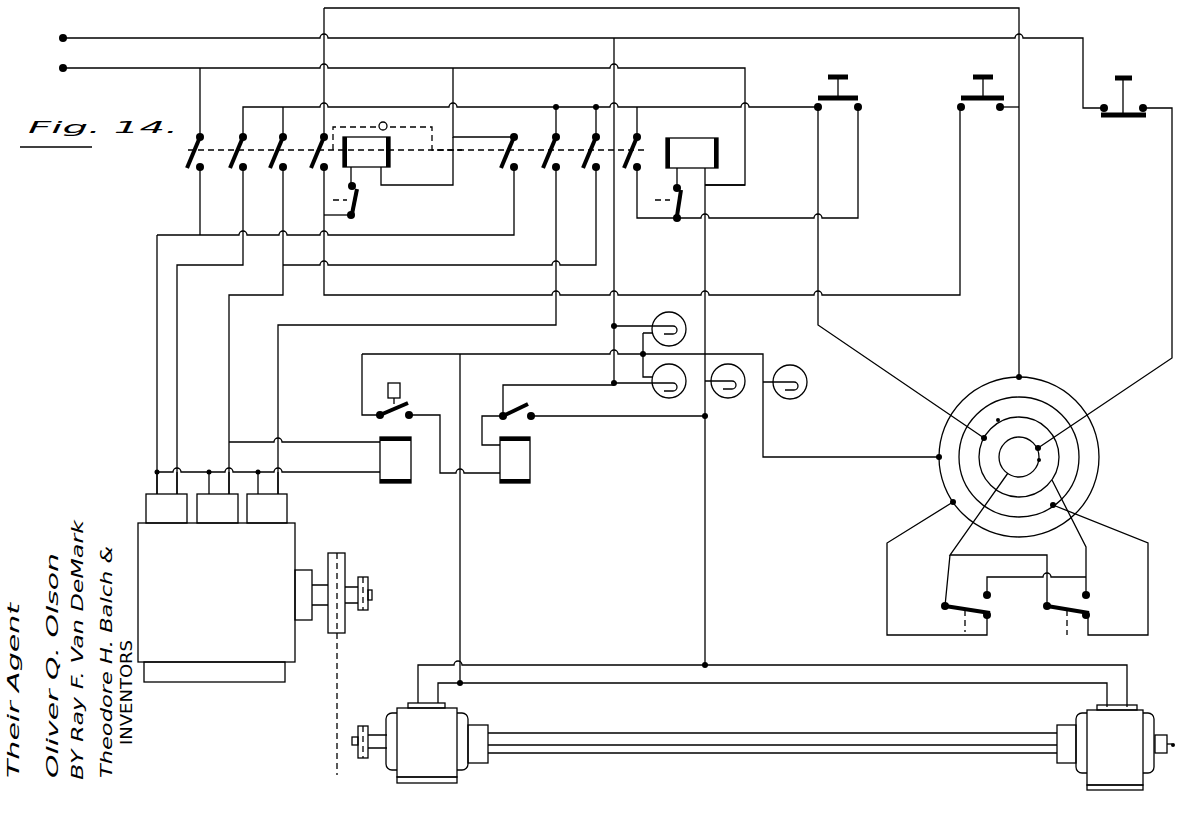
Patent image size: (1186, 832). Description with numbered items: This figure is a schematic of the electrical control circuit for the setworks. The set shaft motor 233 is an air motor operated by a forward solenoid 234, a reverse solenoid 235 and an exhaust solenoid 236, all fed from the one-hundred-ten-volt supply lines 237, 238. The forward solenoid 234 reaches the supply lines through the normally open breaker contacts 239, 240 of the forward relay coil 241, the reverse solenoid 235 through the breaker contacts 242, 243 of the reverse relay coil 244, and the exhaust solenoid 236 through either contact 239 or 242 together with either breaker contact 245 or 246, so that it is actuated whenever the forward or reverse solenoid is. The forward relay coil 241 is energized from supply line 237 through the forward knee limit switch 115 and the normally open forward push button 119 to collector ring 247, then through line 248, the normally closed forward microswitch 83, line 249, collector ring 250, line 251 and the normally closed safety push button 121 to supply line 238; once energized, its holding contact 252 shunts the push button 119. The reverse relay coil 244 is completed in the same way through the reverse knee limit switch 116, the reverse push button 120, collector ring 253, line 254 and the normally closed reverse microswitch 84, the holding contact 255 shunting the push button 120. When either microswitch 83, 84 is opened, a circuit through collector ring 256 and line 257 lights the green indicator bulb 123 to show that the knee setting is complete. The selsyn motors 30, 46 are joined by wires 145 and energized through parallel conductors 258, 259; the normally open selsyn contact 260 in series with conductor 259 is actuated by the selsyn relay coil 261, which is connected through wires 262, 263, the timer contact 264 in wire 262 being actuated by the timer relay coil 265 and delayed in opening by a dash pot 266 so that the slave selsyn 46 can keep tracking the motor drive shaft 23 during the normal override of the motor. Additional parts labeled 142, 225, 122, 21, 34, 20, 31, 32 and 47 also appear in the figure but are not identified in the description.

The supply line 238 is at (128, 37).
The supply line 237 is at (122, 67).
The normally open breaker contact 239 is at (186, 161).
The normally open breaker contact 240 is at (220, 173).
The breaker contact 245 is at (262, 173).
The holding contact 252 is at (304, 173).
The normally open breaker contact 242 is at (492, 174).
The normally open breaker contact 243 is at (538, 174).
The breaker contact 246 is at (578, 174).
The holding contact 255 is at (642, 143).
The forward relay coil 241 is at (366, 161).
The relay contact 142 is at (402, 128).
The forward knee limit switch 115 is at (357, 205).
The reverse relay coil 244 is at (692, 163).
The reverse knee limit switch 116 is at (682, 198).
The reverse push button 120 is at (844, 76).
The forward push button 119 is at (983, 76).
The safety push button 121 is at (1123, 77).
The line 251 is at (1172, 262).
The signal lamp 225 is at (686, 331).
The signal lamp 122 is at (731, 398).
The green indicator bulb 123 is at (798, 398).
The wire 262 is at (362, 380).
The dash pot 266 is at (396, 381).
The timer contact 264 is at (410, 407).
The timer relay coil 265 is at (395, 482).
The selsyn contact 260 is at (528, 407).
The wire 263 is at (506, 431).
The selsyn relay coil 261 is at (530, 462).
The forward solenoid 234 is at (166, 497).
The exhaust solenoid 236 is at (217, 497).
The reverse solenoid 235 is at (267, 497).
The set shaft motor 233 is at (225, 602).
The motor drive shaft 23 is at (321, 583).
The disc 21 is at (340, 553).
The gear 34 is at (366, 577).
The set shaft 20 is at (337, 775).
The gear 31 is at (366, 728).
The gear 32 is at (372, 756).
The selsyn motor 30 is at (437, 743).
The conductor 259 is at (572, 665).
The conductor 258 is at (580, 688).
The wires 145 is at (878, 745).
The slave selsyn 46 is at (1105, 747).
The shaft 47 is at (1169, 742).
The collector ring 247 is at (1058, 388).
The collector ring 253 is at (998, 420).
The collector ring 250 is at (1039, 460).
The collector ring 256 is at (958, 474).
The line 248 is at (887, 568).
The line 249 is at (953, 552).
The line 257 is at (1084, 552).
The line 254 is at (1148, 592).
The forward microswitch 83 is at (958, 605).
The reverse microswitch 84 is at (1060, 615).